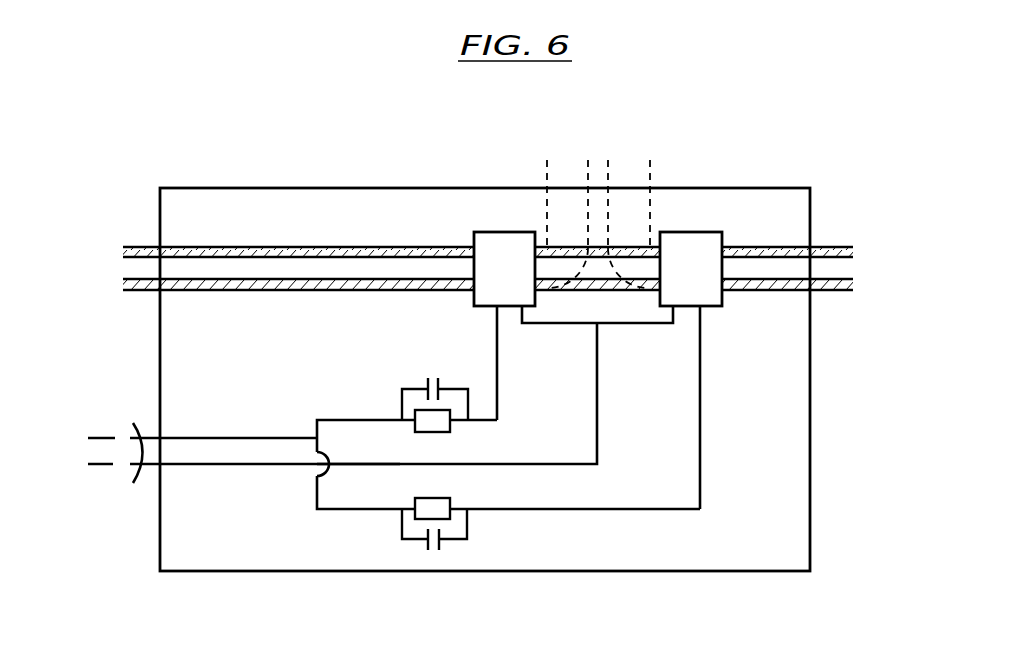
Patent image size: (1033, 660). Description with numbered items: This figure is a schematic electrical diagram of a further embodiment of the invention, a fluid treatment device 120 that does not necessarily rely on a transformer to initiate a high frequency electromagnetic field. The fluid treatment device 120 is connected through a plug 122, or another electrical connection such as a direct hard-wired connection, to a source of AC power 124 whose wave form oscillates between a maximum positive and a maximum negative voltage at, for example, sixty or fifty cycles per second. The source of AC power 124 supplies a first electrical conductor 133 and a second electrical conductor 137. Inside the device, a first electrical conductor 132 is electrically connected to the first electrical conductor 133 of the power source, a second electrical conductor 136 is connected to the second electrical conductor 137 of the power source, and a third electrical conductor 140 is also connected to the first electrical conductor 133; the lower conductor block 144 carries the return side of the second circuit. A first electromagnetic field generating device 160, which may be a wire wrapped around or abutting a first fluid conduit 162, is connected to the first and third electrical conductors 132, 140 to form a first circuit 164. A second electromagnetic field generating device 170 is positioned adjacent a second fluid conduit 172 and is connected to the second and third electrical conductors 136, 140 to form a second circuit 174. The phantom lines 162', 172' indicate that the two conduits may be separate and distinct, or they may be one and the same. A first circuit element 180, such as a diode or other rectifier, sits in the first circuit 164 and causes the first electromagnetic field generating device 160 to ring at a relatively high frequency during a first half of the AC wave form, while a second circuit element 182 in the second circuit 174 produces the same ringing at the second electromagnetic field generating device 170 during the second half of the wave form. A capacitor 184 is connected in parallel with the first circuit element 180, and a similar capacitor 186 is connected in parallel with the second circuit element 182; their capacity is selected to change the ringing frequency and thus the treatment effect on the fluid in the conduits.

The fluid treatment device 120 is at (580, 571).
The plug 122 is at (147, 420).
The source of AC power 124 is at (102, 433).
The first electrical conductor 132 is at (337, 420).
The first electrical conductor of the AC power source 133 is at (187, 438).
The second electrical conductor 136 is at (335, 464).
The second electrical conductor of the AC power source 137 is at (187, 464).
The third electrical conductor 140 is at (522, 464).
The second conductor block 144 is at (347, 510).
The first electromagnetic field generating device 160 is at (485, 232).
The first fluid conduit 162 is at (361, 233).
The phantom lines indicating separate first fluid conduit 162' is at (513, 196).
The first circuit 164 is at (497, 385).
The second electromagnetic field generating device 170 is at (712, 232).
The second fluid conduit 172 is at (818, 234).
The phantom lines indicating separate second fluid conduit 172' is at (685, 196).
The second circuit 174 is at (700, 390).
The first circuit element 180 is at (447, 432).
The second circuit element 182 is at (448, 498).
The capacitor 184 is at (432, 378).
The capacitor 186 is at (432, 551).